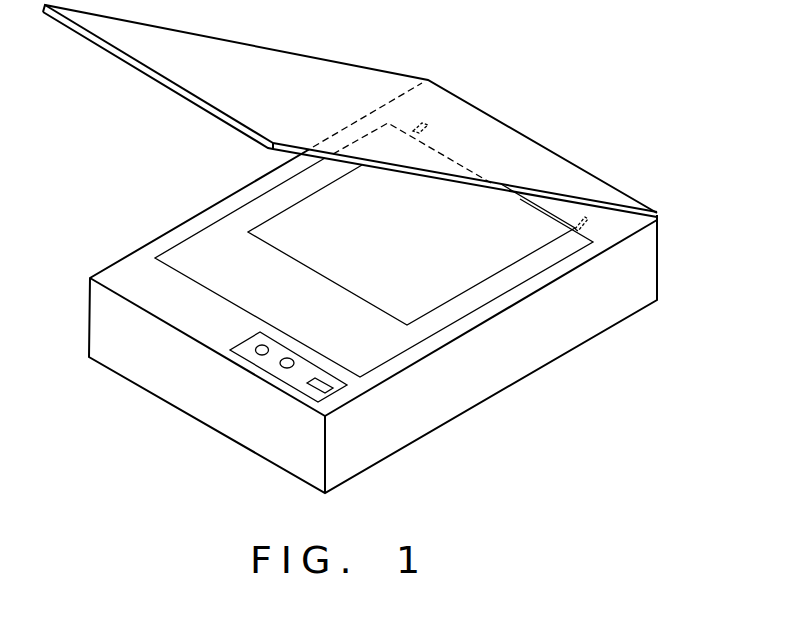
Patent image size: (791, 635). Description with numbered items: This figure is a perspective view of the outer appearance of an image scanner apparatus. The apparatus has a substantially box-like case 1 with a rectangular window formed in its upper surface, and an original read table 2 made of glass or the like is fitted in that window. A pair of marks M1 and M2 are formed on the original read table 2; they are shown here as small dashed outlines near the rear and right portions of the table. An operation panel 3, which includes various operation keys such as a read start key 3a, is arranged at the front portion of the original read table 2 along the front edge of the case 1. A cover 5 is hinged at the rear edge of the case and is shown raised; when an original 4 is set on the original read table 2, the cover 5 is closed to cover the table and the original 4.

The case 1 is at (603, 332).
The original read table 2 is at (192, 248).
The operation panel 3 is at (292, 377).
The read start key 3a is at (253, 350).
The original 4 is at (507, 258).
The cover 5 is at (107, 45).
The mark M1 is at (428, 123).
The mark M2 is at (587, 226).